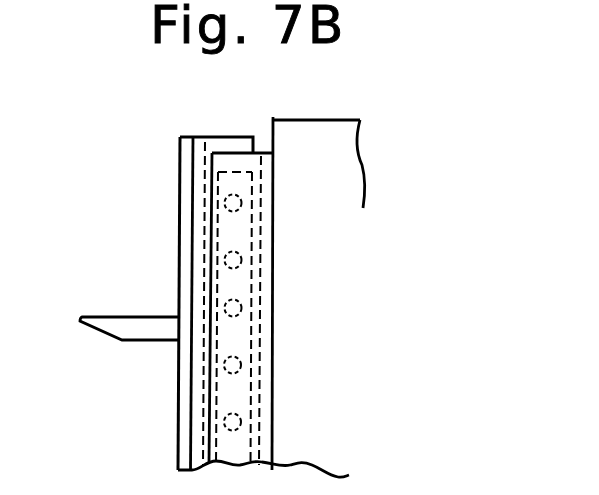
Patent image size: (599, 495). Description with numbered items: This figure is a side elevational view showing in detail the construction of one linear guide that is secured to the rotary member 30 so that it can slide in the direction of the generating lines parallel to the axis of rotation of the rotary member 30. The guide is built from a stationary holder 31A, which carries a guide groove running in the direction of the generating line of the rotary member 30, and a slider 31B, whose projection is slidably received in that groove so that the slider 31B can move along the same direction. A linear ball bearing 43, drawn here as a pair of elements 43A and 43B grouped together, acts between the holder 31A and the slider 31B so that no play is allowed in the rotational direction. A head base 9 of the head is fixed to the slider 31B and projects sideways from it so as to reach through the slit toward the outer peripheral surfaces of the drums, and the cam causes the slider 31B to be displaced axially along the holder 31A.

The head base 9 is at (130, 322).
The rotary member 30 is at (327, 128).
The stationary holder 31A is at (208, 378).
The slider 31B is at (227, 141).
The linear ball bearing 43 is at (330, 318).
The engagement holes 43A is at (242, 309).
The engagement slot 43B is at (253, 222).